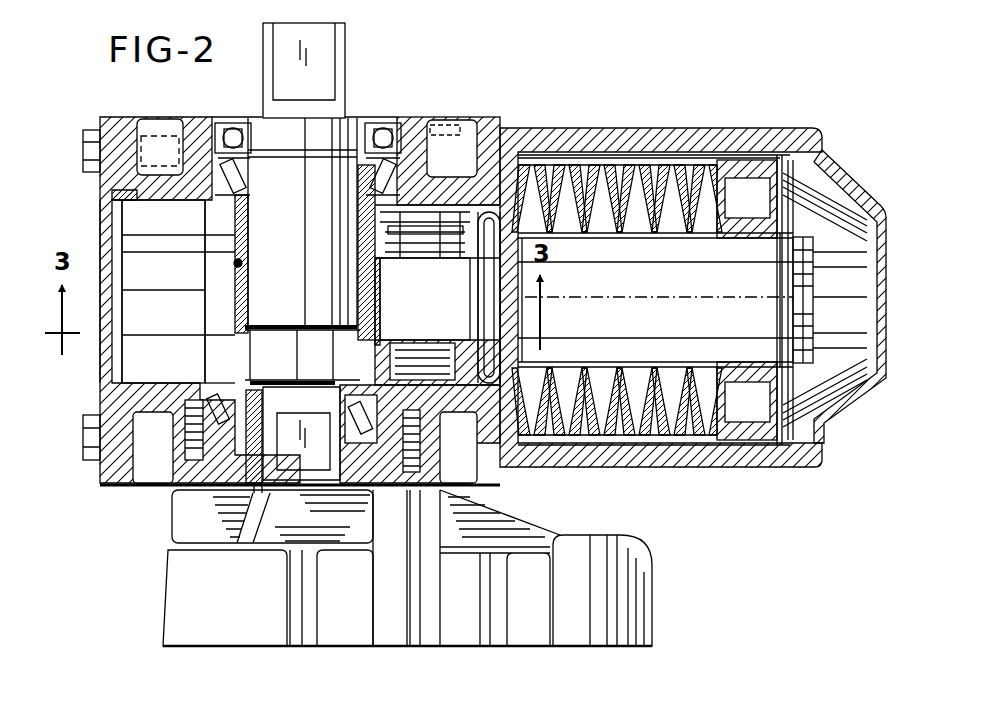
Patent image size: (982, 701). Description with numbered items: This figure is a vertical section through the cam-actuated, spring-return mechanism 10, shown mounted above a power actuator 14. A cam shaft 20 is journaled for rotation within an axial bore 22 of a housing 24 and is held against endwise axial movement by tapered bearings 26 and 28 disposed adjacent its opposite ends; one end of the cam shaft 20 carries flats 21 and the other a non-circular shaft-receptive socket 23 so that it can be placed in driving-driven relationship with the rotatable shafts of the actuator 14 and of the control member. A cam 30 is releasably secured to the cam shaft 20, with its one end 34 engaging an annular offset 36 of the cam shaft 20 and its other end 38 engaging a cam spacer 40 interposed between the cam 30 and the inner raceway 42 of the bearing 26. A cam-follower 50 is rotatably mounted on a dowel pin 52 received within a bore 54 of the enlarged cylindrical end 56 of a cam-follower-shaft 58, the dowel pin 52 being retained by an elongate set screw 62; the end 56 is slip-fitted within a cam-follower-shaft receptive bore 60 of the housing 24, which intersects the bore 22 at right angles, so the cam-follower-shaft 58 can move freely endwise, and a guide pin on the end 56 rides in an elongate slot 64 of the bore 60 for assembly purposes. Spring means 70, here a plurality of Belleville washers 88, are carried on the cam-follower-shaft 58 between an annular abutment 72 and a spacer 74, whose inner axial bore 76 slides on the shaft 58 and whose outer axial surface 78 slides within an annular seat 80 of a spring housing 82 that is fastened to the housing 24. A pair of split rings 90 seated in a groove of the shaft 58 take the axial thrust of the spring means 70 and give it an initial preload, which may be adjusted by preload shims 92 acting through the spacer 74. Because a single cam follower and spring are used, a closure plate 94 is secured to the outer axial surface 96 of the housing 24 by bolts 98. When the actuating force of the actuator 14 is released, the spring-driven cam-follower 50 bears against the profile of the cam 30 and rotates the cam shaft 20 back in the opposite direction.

The cam-actuated, spring-return mechanism 10 is at (455, 100).
The power actuator 14 is at (655, 572).
The cam shaft 20 is at (300, 255).
The flats 21 is at (345, 37).
The axial bore 22 is at (213, 173).
The non-circular shaft-receptive socket 23 is at (258, 494).
The housing 24 is at (410, 117).
The tapered bearing 26 is at (247, 180).
The tapered bearing 28 is at (215, 398).
The cam 30 is at (235, 300).
The one end of the cam 34 is at (234, 338).
The annular offset 36 is at (288, 326).
The other end of the cam 38 is at (234, 264).
The cam spacer 40 is at (248, 222).
The inner raceway 42 is at (358, 190).
The cam-follower 50 is at (433, 311).
The dowel pin 52 is at (430, 345).
The bore 54 is at (443, 210).
The enlarged cylindrical end 56 is at (515, 180).
The cam-follower-shaft 58 is at (658, 286).
The cam-follower-shaft receptive bore 60 is at (128, 380).
The elongate set screw 62 is at (437, 254).
The elongate slot 64 is at (112, 195).
The spring means 70 is at (652, 163).
The annular abutment 72 is at (497, 375).
The spacer 74 is at (725, 165).
The inner axial bore 76 is at (745, 242).
The outer axial surface 78 is at (779, 160).
The annular seat 80 is at (762, 150).
The spring housing 82 is at (605, 128).
The Belleville washers 88 is at (702, 165).
The split rings 90 is at (808, 356).
The preload shim 92 is at (815, 165).
The closure plate 94 is at (110, 230).
The outer axial surface 96 is at (108, 420).
The bolts 98 is at (96, 135).